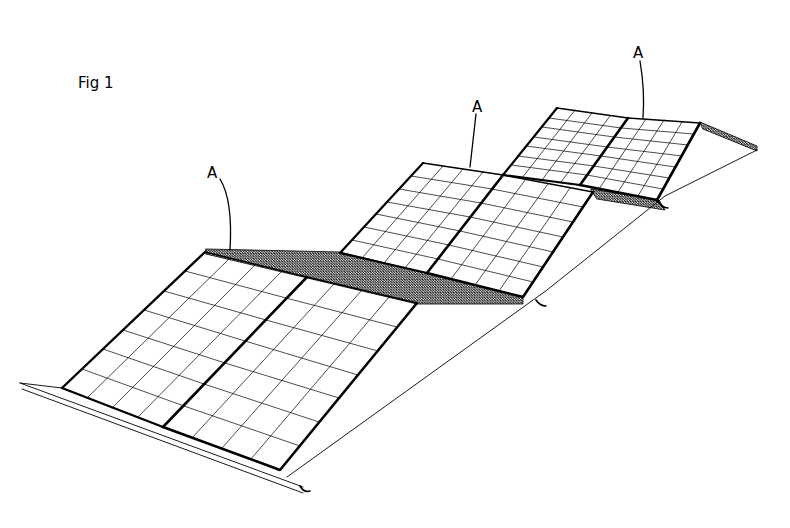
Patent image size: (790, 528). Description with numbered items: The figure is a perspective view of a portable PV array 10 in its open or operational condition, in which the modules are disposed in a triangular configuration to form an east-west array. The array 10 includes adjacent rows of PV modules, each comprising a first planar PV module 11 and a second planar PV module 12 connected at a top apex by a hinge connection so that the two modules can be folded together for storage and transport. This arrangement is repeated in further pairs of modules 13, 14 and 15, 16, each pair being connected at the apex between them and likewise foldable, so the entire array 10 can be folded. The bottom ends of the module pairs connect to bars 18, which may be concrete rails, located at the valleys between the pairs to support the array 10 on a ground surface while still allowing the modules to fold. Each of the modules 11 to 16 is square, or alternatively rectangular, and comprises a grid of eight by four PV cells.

The portable PV array 10 is at (316, 152).
The first planar PV module 11 is at (200, 293).
The second planar PV module 12 is at (463, 310).
The PV module 13 is at (434, 190).
The PV module 14 is at (613, 205).
The PV module 15 is at (567, 130).
The PV module 16 is at (717, 140).
The bars 18 is at (306, 491).